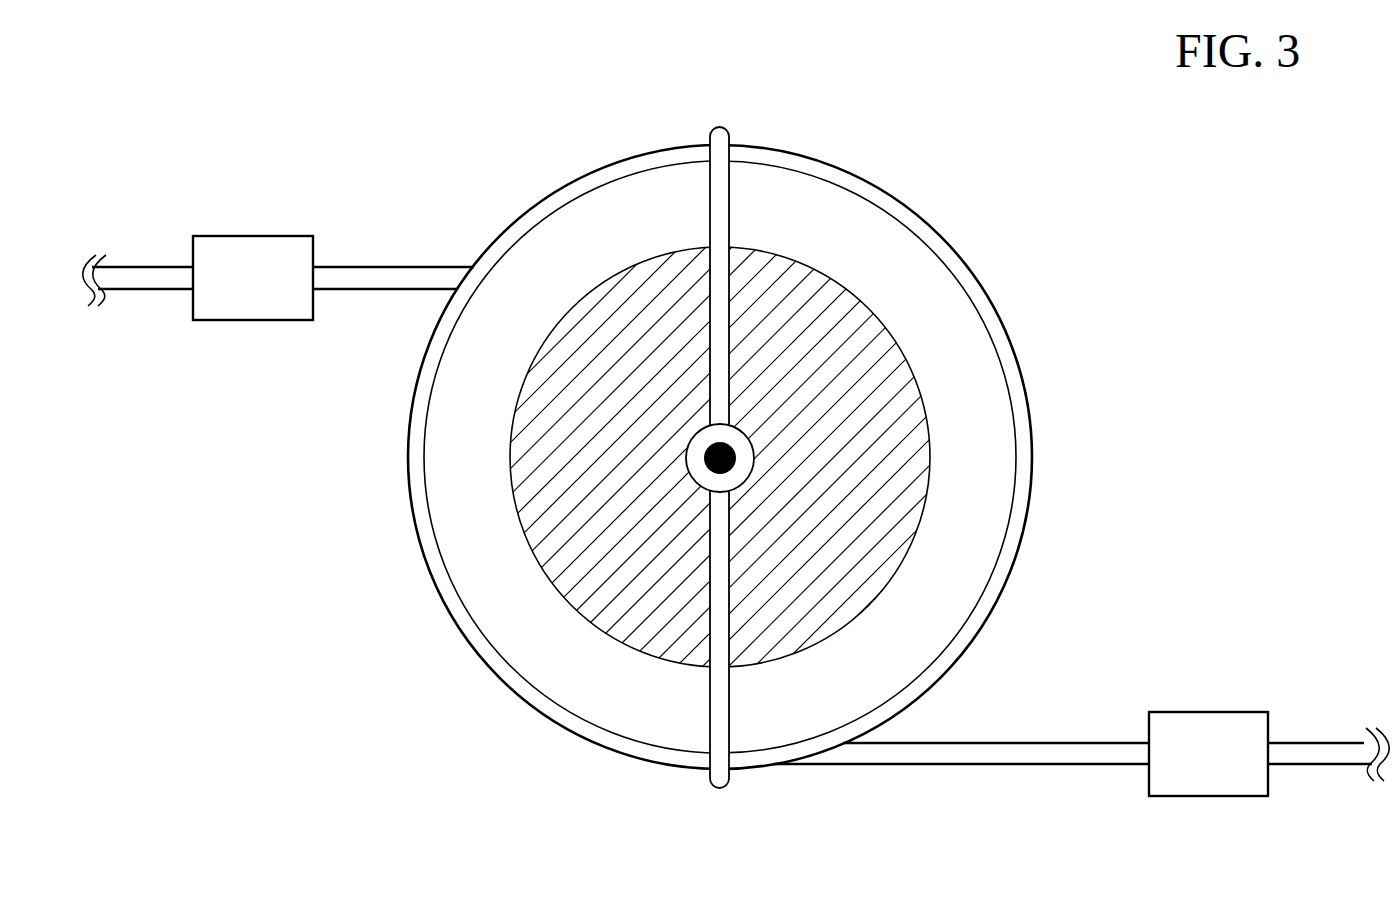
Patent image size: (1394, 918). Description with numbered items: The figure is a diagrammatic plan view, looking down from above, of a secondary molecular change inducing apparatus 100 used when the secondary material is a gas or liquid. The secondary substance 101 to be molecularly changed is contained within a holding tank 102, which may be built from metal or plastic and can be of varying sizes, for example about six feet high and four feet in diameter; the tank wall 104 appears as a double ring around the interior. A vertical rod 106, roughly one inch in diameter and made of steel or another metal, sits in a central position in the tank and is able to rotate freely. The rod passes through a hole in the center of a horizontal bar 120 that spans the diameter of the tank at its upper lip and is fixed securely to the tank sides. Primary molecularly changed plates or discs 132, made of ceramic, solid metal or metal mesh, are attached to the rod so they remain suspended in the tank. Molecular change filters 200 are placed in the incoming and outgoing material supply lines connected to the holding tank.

The secondary molecular change inducing apparatus 100 is at (729, 485).
The secondary substance 101 is at (561, 282).
The holding tank 102 is at (658, 765).
The inner wall 104 is at (946, 242).
The vertical rod 106 is at (706, 459).
The horizontal bar 120 is at (729, 205).
The primary molecularly changed plates or discs 132 is at (887, 514).
The molecular change filters 200 is at (253, 236).